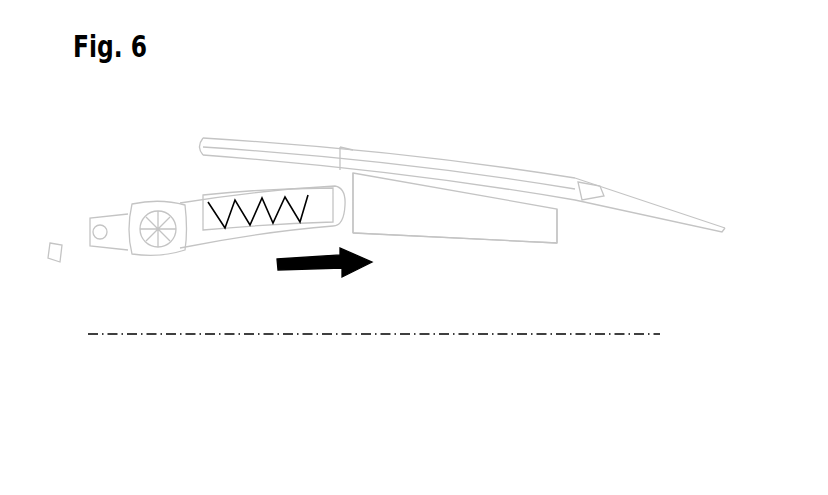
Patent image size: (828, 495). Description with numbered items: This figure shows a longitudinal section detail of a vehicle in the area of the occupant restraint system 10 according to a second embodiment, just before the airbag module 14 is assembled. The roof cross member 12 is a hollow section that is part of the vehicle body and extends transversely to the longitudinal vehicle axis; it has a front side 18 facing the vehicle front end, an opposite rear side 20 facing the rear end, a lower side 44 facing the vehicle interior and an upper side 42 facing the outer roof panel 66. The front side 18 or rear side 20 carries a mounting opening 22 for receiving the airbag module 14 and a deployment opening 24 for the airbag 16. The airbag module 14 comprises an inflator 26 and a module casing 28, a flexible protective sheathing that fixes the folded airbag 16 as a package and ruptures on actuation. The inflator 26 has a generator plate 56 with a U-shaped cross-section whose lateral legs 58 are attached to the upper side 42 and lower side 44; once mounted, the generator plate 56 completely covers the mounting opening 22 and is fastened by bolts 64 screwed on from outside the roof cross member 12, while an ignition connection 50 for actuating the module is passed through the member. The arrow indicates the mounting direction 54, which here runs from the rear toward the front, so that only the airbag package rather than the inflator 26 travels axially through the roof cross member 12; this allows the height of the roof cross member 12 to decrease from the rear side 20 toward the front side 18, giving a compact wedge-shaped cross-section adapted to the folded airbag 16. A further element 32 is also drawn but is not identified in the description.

The occupant restraint system 10 is at (581, 119).
The roof cross member 12 is at (470, 181).
The airbag module 14 is at (194, 251).
The airbag 16 is at (240, 205).
The front side 18 is at (558, 243).
The rear side 20 is at (352, 199).
The mounting opening 22 is at (346, 197).
The deployment opening 24 is at (556, 199).
The inflator 26 is at (170, 208).
The module casing 28 is at (193, 196).
The wiper blade end 32 is at (690, 212).
The upper side 42 is at (420, 172).
The lower side 44 is at (433, 240).
The ignition connection 50 is at (108, 216).
The mounting direction 54 is at (308, 270).
The generator plate 56 is at (136, 256).
The lateral legs 58 is at (131, 202).
The bolts 64 is at (56, 258).
The outer roof panel 66 is at (353, 148).